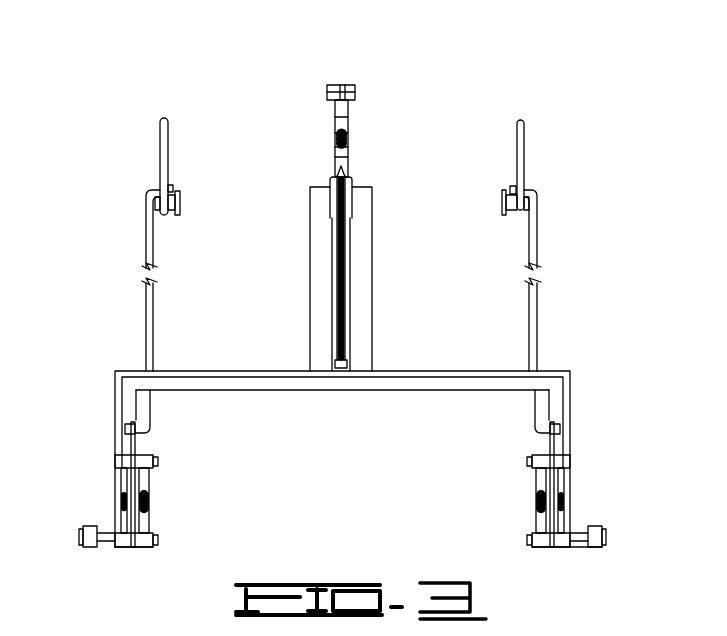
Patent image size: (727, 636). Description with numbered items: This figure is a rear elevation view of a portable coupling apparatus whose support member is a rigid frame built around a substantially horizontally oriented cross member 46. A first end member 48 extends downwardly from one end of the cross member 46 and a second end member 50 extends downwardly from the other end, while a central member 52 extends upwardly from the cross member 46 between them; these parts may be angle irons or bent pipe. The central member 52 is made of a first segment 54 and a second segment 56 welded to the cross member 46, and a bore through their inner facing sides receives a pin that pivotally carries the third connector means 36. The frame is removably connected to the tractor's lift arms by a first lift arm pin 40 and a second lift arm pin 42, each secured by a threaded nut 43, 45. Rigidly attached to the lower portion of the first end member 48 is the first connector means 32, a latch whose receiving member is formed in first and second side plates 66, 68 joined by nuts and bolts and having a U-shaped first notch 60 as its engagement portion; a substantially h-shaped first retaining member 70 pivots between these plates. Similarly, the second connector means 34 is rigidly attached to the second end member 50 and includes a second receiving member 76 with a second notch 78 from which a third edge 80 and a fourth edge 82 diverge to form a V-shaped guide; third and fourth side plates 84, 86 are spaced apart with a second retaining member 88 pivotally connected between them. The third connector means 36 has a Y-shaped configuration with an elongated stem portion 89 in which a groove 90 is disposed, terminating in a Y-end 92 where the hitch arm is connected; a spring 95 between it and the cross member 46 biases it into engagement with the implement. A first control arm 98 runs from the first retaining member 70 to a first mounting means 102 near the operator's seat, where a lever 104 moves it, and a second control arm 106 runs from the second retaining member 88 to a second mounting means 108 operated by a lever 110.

The first connector means 32 is at (546, 553).
The second connector means 34 is at (150, 553).
The third connector means 36 is at (330, 88).
The first lift arm pin 40 is at (577, 533).
The second lift arm pin 42 is at (106, 530).
The nut 43 is at (598, 549).
The nut 45 is at (88, 549).
The cross member 46 is at (448, 370).
The first end member 48 is at (572, 410).
The second end member 50 is at (115, 412).
The central member 52 is at (378, 282).
The first segment 54 is at (372, 328).
The second segment 56 is at (310, 286).
The first notch 60 is at (532, 497).
The first side plate 66 is at (580, 548).
The second side plate 68 is at (538, 518).
The first retaining member 70 is at (547, 440).
The second receiving member 76 is at (150, 478).
The second notch 78 is at (145, 503).
The third edge 80 is at (125, 478).
The fourth edge 82 is at (122, 545).
The third side plate 84 is at (140, 519).
The fourth side plate 86 is at (120, 448).
The second retaining member 88 is at (138, 440).
The elongated stem portion 89 is at (335, 117).
The groove 90 is at (333, 147).
The Y-end 92 is at (350, 180).
The spring 95 is at (340, 320).
The first control arm 98 is at (535, 317).
The first mounting means 102 is at (505, 182).
The lever 104 is at (520, 135).
The second control arm 106 is at (146, 320).
The second mounting means 108 is at (176, 186).
The lever 110 is at (162, 140).